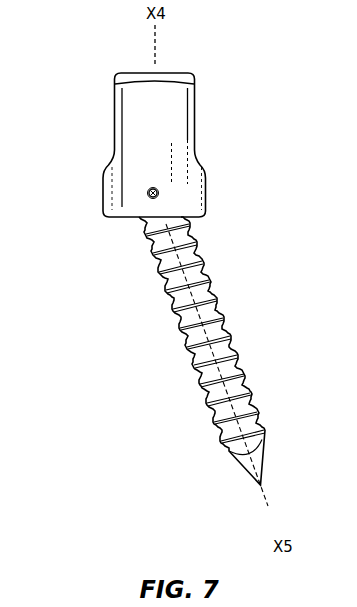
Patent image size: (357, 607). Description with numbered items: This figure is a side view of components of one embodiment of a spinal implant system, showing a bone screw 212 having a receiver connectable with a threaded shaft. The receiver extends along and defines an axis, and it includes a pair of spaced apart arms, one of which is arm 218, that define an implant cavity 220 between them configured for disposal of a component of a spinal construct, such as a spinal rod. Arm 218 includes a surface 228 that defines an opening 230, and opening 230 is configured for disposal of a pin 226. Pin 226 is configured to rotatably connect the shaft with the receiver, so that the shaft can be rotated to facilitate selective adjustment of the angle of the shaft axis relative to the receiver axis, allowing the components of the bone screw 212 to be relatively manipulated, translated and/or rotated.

The implant cavity 220 is at (120, 50).
The arm 218 is at (175, 103).
The bone screw 212 is at (133, 328).
The pin 226 is at (149, 190).
The surface 228 is at (158, 190).
The opening 230 is at (159, 193).